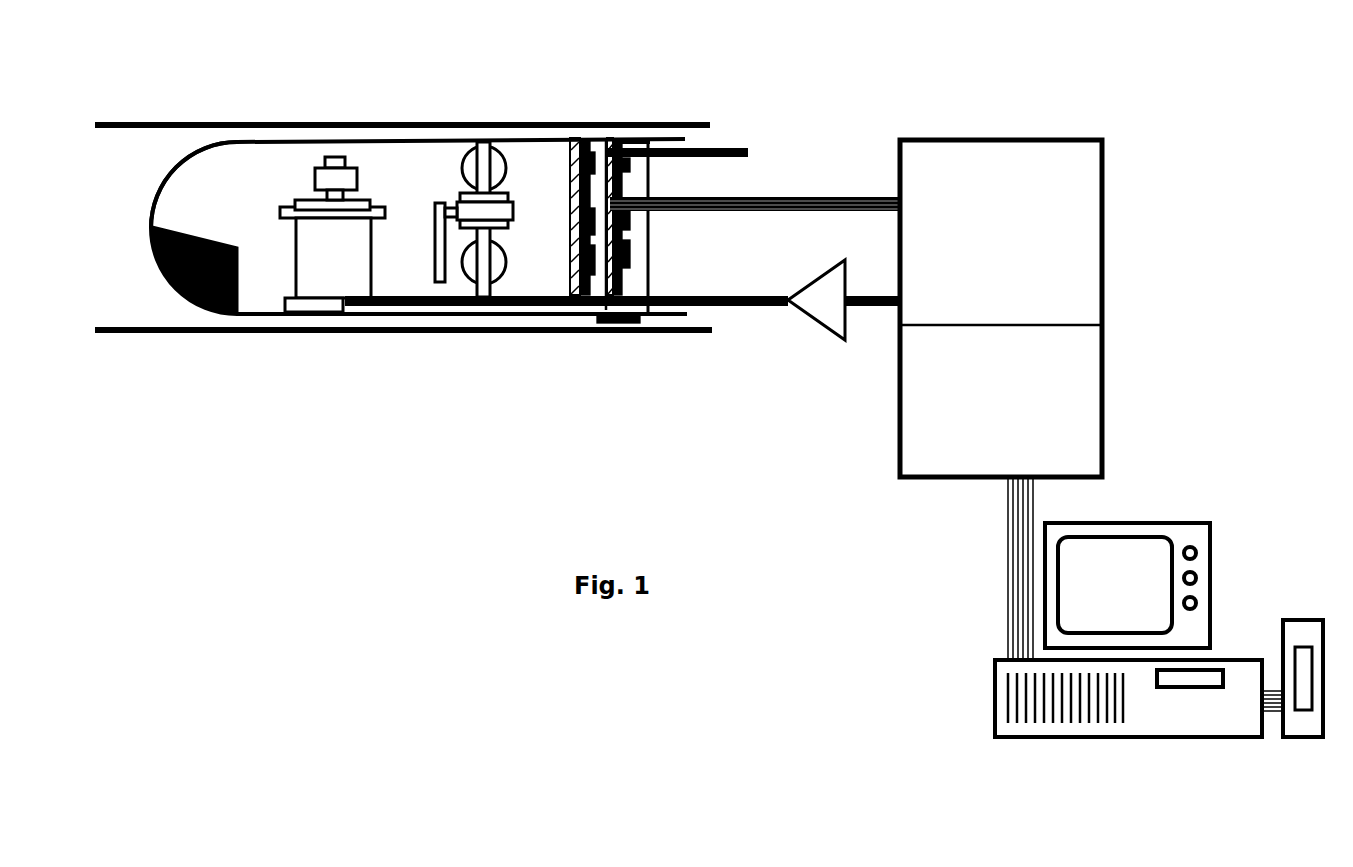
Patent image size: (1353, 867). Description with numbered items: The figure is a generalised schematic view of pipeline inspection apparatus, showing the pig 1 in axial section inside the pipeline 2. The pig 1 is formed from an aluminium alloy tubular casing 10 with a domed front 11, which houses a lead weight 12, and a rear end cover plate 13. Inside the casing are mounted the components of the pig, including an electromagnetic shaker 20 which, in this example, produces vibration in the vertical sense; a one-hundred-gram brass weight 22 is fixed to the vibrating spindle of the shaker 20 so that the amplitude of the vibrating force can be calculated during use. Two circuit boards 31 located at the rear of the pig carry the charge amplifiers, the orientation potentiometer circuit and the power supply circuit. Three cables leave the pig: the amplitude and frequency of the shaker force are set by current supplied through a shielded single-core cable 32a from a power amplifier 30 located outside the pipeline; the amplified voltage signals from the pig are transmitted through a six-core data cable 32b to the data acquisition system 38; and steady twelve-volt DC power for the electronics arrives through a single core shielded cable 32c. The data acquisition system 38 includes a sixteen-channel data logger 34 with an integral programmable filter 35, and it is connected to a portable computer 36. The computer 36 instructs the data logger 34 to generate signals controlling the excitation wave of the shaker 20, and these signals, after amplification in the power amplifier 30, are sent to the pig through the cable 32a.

The pig 1 is at (283, 156).
The pipeline 2 is at (140, 122).
The tubular casing 10 is at (395, 140).
The domed front 11 is at (150, 203).
The lead weight 12 is at (158, 278).
The rear end cover plate 13 is at (653, 185).
The electromagnetic shaker 20 is at (327, 278).
The brass weight 22 is at (320, 177).
The power amplifier 30 is at (820, 282).
The circuit boards 31 is at (606, 140).
The shielded single-core cable 32a is at (742, 305).
The 6-core data cable 32b is at (690, 215).
The single core shielded cable 32c is at (730, 152).
The data logger 34 is at (1087, 225).
The programmable filter 35 is at (1088, 415).
The portable computer 36 is at (1236, 572).
The data acquisition system 38 is at (1049, 308).